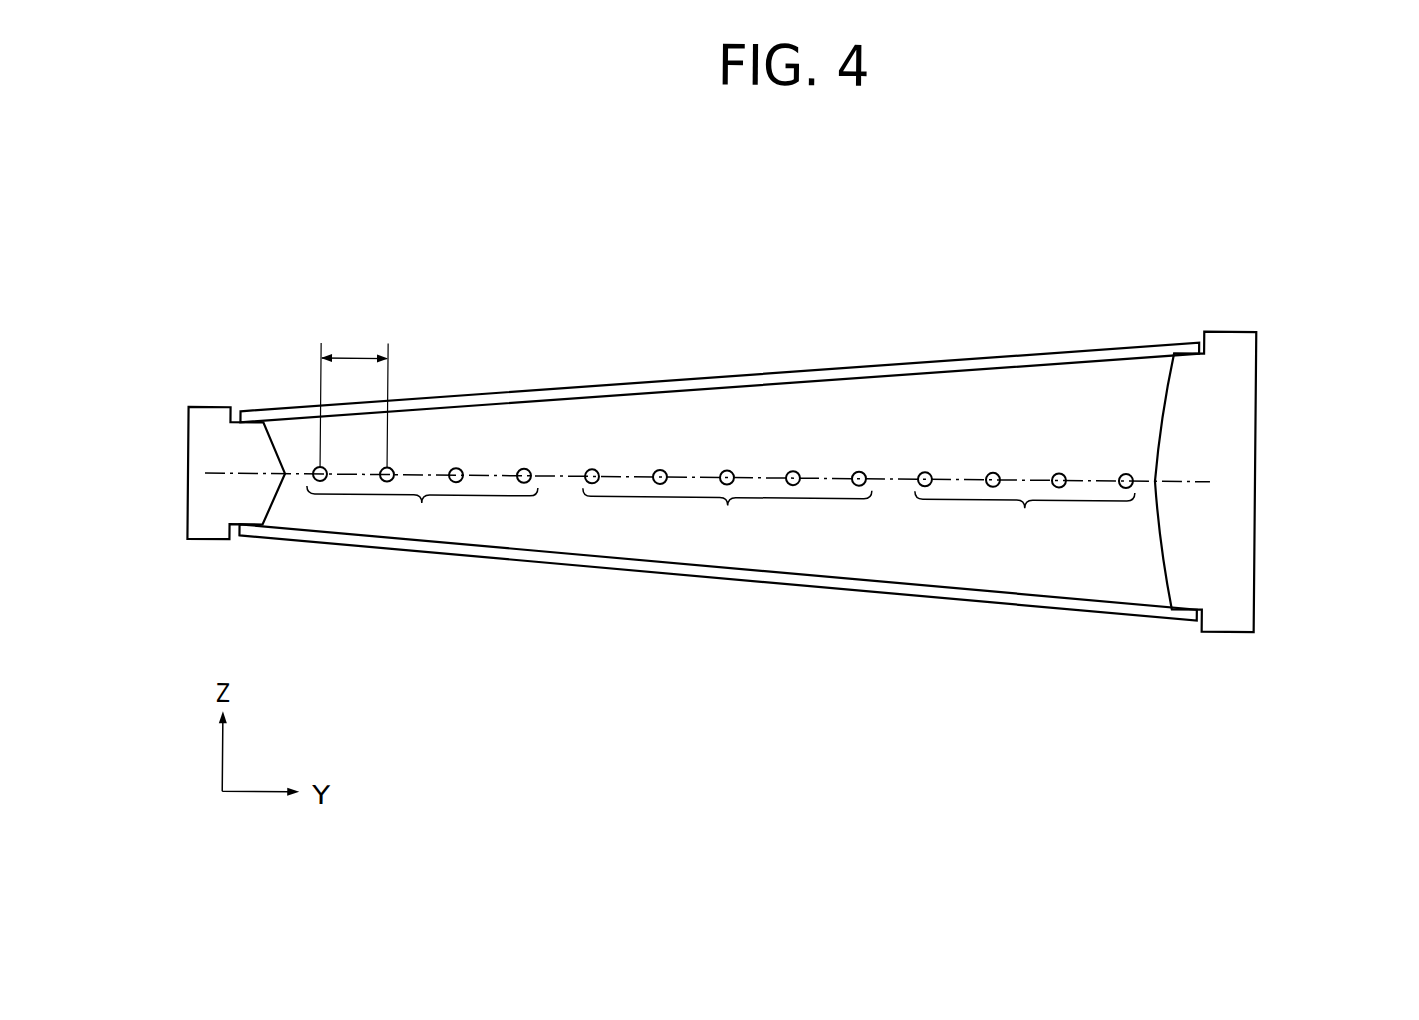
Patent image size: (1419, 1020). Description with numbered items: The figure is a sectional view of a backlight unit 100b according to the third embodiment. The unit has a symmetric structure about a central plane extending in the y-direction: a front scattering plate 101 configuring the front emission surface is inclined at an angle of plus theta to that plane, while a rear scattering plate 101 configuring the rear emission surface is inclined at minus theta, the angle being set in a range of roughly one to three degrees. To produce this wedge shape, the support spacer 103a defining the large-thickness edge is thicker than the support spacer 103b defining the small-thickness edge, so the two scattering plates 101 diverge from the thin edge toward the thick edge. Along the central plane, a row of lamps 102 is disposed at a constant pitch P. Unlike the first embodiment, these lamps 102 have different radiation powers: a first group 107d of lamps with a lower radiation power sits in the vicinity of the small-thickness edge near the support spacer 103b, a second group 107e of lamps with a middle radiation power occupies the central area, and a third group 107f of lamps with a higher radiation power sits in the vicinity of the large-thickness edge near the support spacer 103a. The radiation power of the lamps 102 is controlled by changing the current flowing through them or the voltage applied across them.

The backlight unit 100b is at (1238, 182).
The scattering plate 101 is at (463, 396).
The lamp 102 is at (318, 482).
The support spacer 103a is at (1255, 357).
The support spacer 103b is at (188, 444).
The first group of lamps 107d is at (421, 513).
The second group of lamps 107e is at (726, 518).
The third group of lamps 107f is at (1024, 519).
The pitch P is at (354, 395).